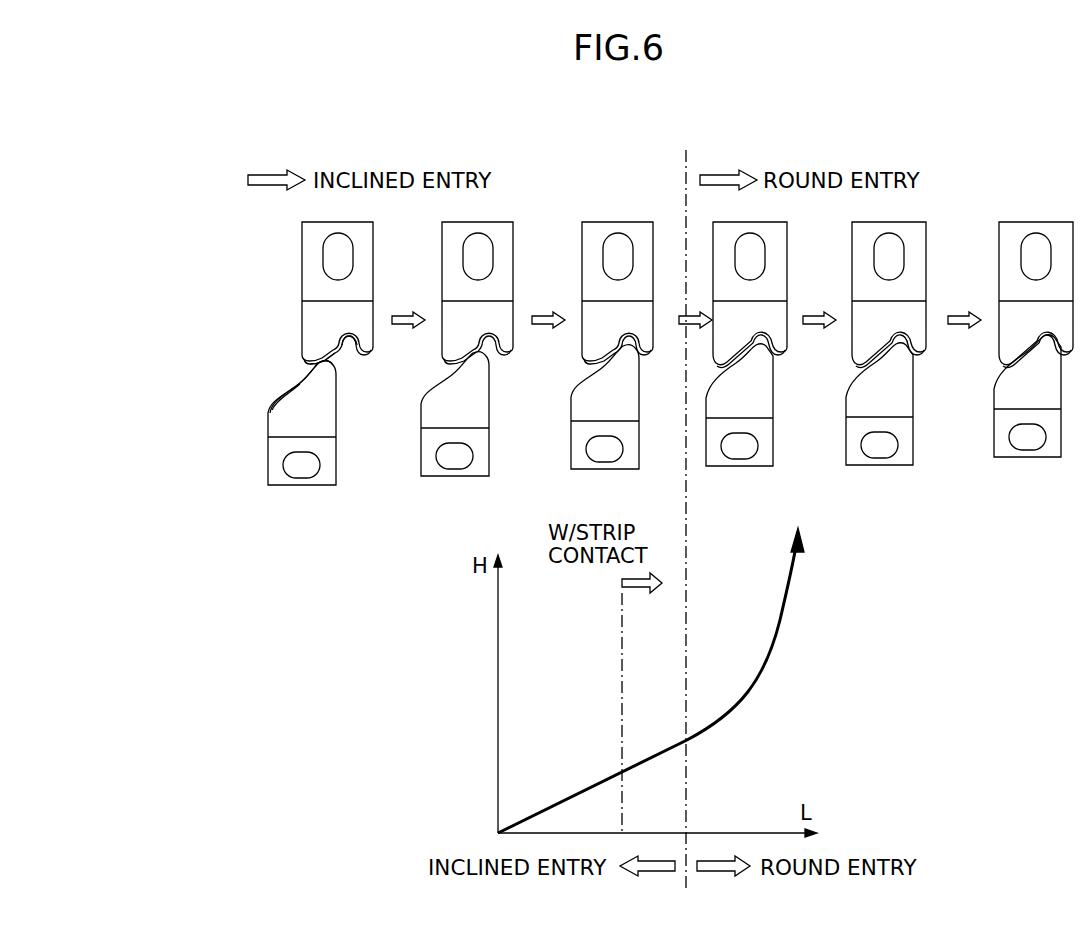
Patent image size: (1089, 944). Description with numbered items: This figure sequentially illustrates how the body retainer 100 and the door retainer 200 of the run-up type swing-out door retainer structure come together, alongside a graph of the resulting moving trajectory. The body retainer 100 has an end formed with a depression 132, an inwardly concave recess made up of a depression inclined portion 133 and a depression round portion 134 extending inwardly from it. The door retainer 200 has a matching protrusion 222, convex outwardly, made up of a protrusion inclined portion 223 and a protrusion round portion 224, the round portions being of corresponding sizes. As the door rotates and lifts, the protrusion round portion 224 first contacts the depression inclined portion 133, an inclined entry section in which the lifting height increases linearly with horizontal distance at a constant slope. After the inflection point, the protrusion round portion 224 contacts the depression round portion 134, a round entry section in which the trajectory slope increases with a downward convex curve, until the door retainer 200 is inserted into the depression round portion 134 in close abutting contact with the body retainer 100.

The body retainer 100 is at (268, 228).
The depression 132 is at (167, 269).
The depression inclined portion 133 is at (330, 352).
The depression round portion 134 is at (337, 345).
The door retainer 200 is at (245, 472).
The protrusion 222 is at (167, 378).
The protrusion inclined portion 223 is at (278, 400).
The protrusion round portion 224 is at (318, 367).